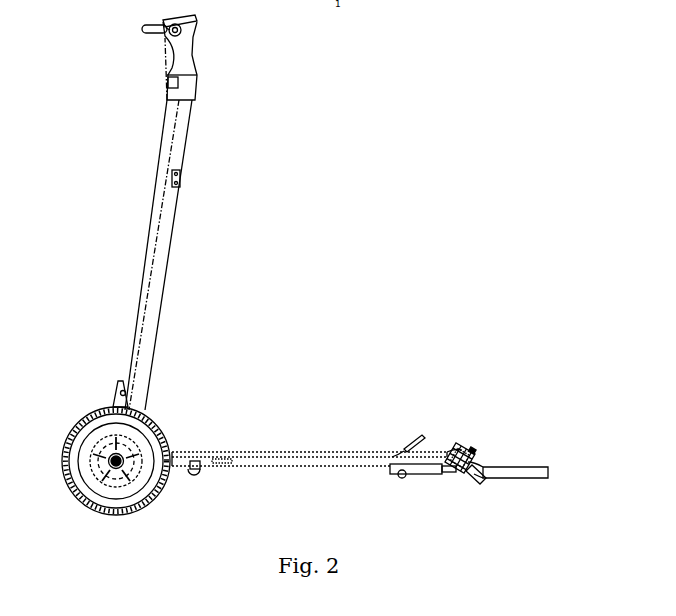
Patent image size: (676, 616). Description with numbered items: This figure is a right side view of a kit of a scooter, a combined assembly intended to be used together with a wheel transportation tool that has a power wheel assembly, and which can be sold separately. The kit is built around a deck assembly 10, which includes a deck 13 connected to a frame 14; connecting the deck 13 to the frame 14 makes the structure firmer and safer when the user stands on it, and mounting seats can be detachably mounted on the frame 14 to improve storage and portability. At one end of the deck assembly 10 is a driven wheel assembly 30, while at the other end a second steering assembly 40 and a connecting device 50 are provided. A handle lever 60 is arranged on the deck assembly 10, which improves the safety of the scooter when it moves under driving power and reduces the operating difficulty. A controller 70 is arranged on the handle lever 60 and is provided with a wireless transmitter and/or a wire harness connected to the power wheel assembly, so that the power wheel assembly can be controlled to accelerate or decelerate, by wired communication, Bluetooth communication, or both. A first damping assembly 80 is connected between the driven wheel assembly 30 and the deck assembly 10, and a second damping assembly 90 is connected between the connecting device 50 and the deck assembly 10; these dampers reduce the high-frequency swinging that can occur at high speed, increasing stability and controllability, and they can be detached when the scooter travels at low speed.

The deck assembly 10 is at (309, 462).
The deck 13 is at (305, 452).
The frame 14 is at (280, 466).
The driven wheel assembly 30 is at (165, 517).
The second steering assembly 40 is at (488, 444).
The connecting device 50 is at (526, 493).
The handle lever 60 is at (145, 268).
The controller 70 is at (204, 20).
The first damping assembly 80 is at (187, 472).
The second damping assembly 90 is at (413, 472).